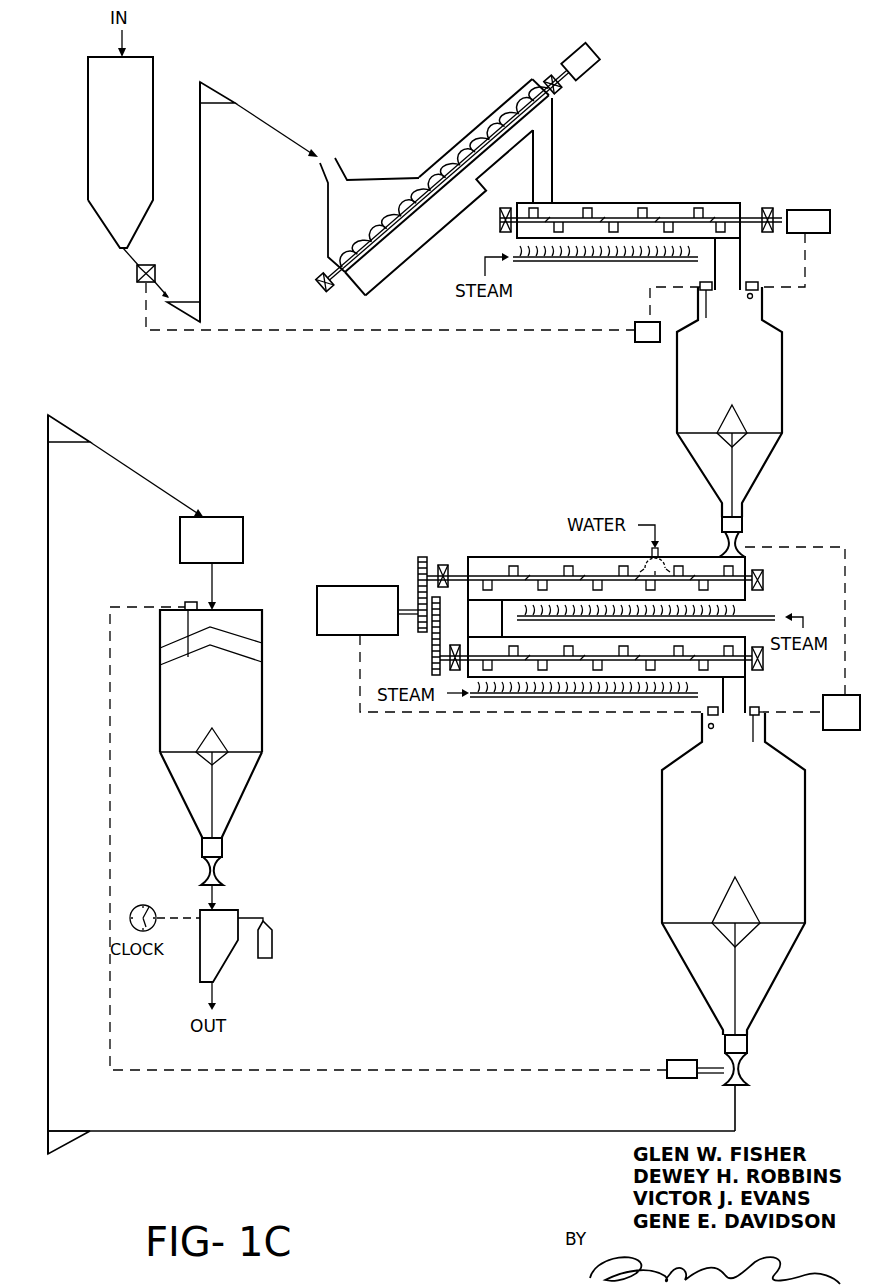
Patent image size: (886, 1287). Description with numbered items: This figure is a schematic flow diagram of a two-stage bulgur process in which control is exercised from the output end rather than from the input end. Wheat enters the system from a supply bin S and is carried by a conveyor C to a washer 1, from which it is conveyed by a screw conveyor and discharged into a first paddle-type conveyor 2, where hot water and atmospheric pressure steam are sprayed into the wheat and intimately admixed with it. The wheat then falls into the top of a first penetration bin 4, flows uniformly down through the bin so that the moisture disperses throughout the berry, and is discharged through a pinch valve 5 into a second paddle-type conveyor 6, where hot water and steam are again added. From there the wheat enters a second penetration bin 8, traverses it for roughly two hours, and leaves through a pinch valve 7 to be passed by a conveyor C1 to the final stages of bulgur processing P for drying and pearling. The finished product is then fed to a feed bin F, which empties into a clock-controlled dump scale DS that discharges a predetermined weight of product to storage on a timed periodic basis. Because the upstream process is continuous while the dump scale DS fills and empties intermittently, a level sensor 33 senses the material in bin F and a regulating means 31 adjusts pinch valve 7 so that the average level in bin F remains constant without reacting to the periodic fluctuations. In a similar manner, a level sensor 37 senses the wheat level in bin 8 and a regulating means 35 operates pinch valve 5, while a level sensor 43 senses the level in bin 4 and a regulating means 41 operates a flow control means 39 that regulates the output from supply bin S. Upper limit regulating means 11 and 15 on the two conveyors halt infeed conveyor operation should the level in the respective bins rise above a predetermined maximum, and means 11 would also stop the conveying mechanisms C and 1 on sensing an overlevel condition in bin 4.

The washer 1 is at (483, 118).
The first paddle-type conveyor 2 is at (660, 202).
The first penetration bin 4 is at (677, 402).
The pinch valve 5 is at (722, 547).
The second paddle-type conveyor 6 is at (512, 552).
The pinch valve 7 is at (742, 1067).
The second penetration bin 8 is at (662, 872).
The upper limit regulating means 11 is at (815, 210).
The upper limit regulating means 15 is at (355, 586).
The regulating means 31 is at (685, 1060).
The level sensor 33 is at (186, 602).
The regulating means 35 is at (843, 730).
The level sensor 37 is at (758, 707).
The flow control means 39 is at (144, 284).
The regulating means 41 is at (647, 342).
The level sensor 43 is at (699, 282).
The supply bin S is at (88, 172).
The conveyor C is at (200, 182).
The conveyor C1 is at (48, 793).
The final stages of bulgur processing P is at (243, 537).
The feed bin F is at (262, 700).
The dump scale DS is at (200, 967).